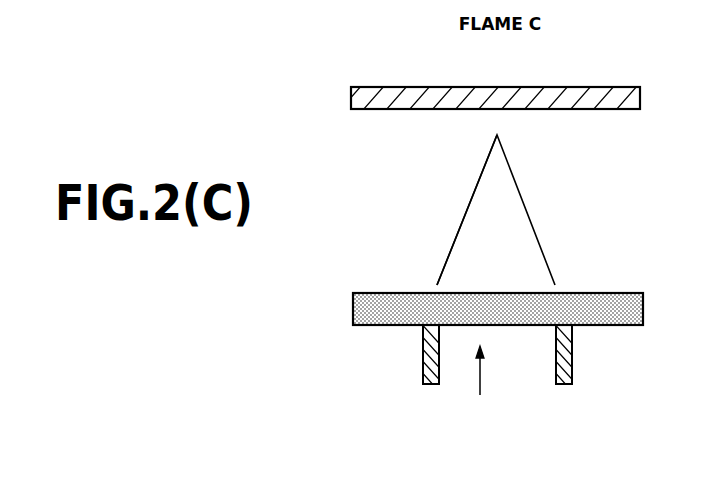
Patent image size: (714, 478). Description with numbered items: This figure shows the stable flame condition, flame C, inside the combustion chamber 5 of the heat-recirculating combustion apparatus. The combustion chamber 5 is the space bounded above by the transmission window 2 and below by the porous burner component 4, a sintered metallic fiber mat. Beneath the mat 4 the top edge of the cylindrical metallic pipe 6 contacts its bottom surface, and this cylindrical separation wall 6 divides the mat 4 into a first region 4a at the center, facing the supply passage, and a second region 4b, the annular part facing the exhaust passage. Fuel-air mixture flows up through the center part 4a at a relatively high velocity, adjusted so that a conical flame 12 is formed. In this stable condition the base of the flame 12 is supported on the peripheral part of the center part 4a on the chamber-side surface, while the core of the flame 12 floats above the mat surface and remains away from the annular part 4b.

The transmission window 2 is at (640, 92).
The combustion chamber 5 is at (489, 207).
The flame 12 is at (460, 246).
The porous burner component 4 is at (598, 292).
The first region 4a is at (503, 327).
The second region 4b is at (378, 327).
The cylindrical metallic pipe 6 is at (574, 376).